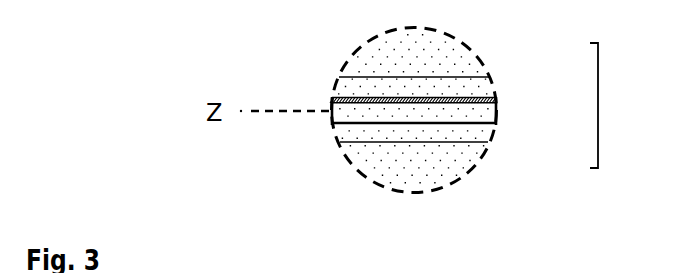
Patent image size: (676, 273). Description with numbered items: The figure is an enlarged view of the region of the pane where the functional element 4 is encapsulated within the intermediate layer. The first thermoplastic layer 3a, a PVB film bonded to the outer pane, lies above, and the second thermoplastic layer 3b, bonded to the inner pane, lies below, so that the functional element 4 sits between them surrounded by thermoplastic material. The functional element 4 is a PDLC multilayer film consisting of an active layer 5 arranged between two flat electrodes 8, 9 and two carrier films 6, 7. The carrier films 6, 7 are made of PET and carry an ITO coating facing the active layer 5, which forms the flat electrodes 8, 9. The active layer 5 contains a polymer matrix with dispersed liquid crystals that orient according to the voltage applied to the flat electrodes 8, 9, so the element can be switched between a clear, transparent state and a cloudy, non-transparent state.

The first thermoplastic layer 3a is at (388, 57).
The second thermoplastic layer 3b is at (448, 177).
The functional element 4 is at (598, 105).
The active layer 5 is at (470, 109).
The carrier film 6 is at (477, 85).
The carrier film 7 is at (475, 135).
The flat electrode 8 is at (482, 99).
The flat electrode 9 is at (482, 124).